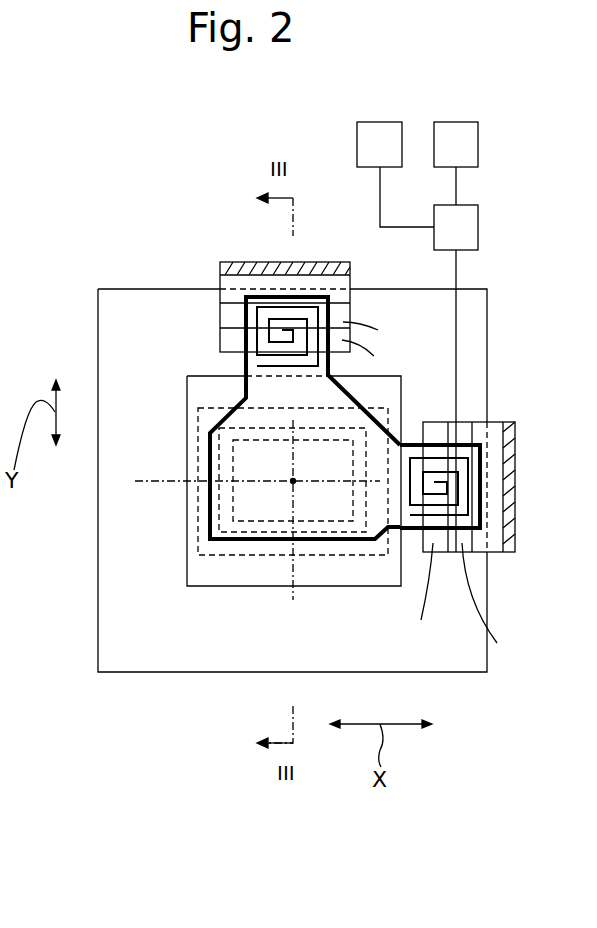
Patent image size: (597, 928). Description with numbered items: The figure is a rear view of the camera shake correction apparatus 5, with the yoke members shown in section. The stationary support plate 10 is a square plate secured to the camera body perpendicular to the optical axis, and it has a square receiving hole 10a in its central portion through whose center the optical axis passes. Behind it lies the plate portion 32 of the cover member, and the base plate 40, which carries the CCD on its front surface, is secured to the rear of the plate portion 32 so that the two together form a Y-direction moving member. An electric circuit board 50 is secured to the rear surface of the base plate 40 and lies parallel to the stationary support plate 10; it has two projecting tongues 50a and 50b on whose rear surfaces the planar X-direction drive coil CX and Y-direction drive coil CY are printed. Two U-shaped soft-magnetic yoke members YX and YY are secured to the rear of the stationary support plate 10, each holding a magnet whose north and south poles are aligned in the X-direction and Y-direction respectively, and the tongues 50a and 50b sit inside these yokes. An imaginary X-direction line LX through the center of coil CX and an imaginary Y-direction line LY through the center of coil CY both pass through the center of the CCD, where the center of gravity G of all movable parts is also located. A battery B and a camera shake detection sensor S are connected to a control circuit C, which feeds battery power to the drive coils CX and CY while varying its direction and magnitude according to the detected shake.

The camera shake correction apparatus 5 is at (151, 268).
The stationary support plate 10 is at (462, 660).
The receiving hole 10a is at (193, 432).
The plate portion 32 is at (220, 580).
The base plate 40 is at (330, 538).
The electric circuit board 50 is at (260, 503).
The projecting tongue 50a is at (412, 520).
The projecting tongue 50b is at (320, 318).
The X-direction drive coil CX is at (452, 543).
The Y-direction drive coil CY is at (257, 323).
The yoke member YX is at (507, 540).
The yoke member YY is at (320, 267).
The imaginary X-direction line LX is at (160, 484).
The imaginary Y-direction line LY is at (295, 455).
The center of gravity G is at (293, 480).
The battery B is at (395, 174).
The camera shake detection sensor S is at (456, 163).
The control circuit C is at (456, 378).